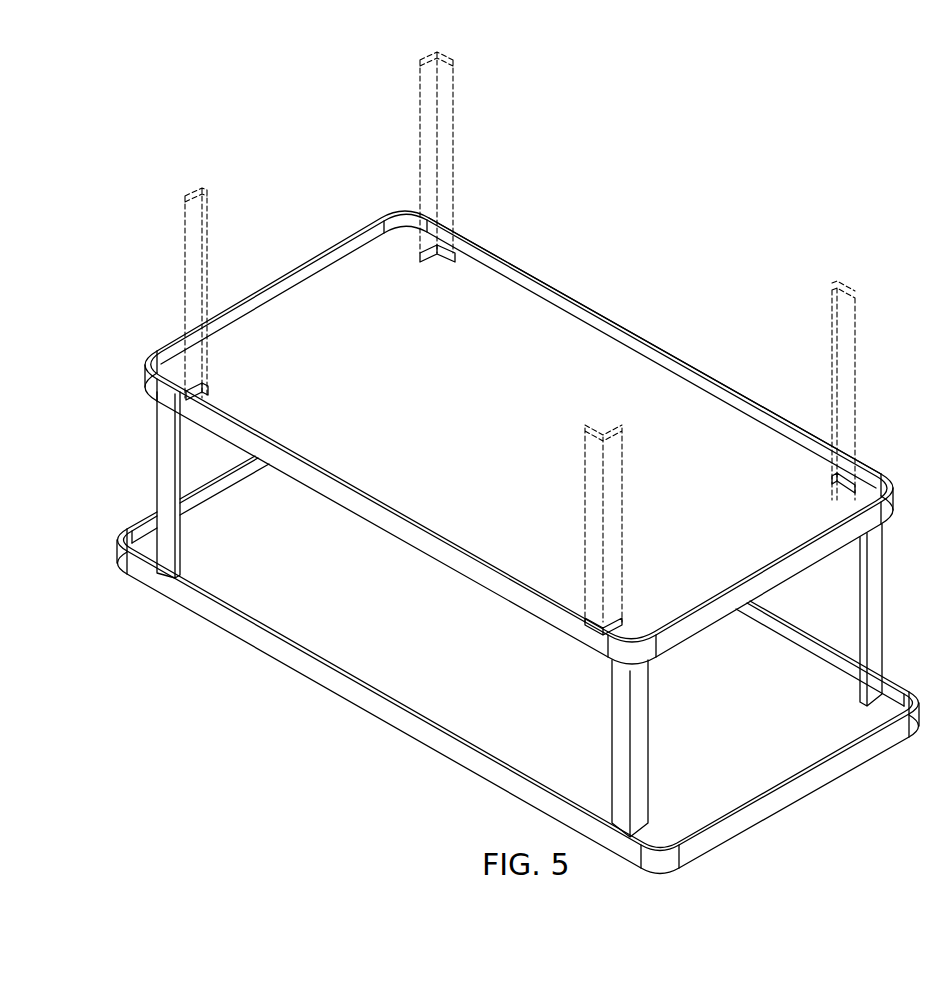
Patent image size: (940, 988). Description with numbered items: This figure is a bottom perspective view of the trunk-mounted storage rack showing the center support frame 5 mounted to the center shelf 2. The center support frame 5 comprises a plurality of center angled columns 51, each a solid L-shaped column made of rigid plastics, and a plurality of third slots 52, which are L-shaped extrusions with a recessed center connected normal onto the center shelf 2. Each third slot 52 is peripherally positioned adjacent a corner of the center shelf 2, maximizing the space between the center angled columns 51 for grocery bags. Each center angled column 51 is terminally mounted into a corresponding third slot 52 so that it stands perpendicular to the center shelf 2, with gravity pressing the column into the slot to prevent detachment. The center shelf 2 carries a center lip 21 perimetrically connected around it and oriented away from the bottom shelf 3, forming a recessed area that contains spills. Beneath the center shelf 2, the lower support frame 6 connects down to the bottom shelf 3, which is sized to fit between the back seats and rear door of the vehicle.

The center shelf 2 is at (322, 226).
The center lip 21 is at (612, 324).
The bottom shelf 3 is at (132, 484).
The center support frame 5 is at (520, 337).
The center angled column 51 is at (420, 105).
The third slot 52 is at (455, 248).
The lower support frame 6 is at (870, 597).